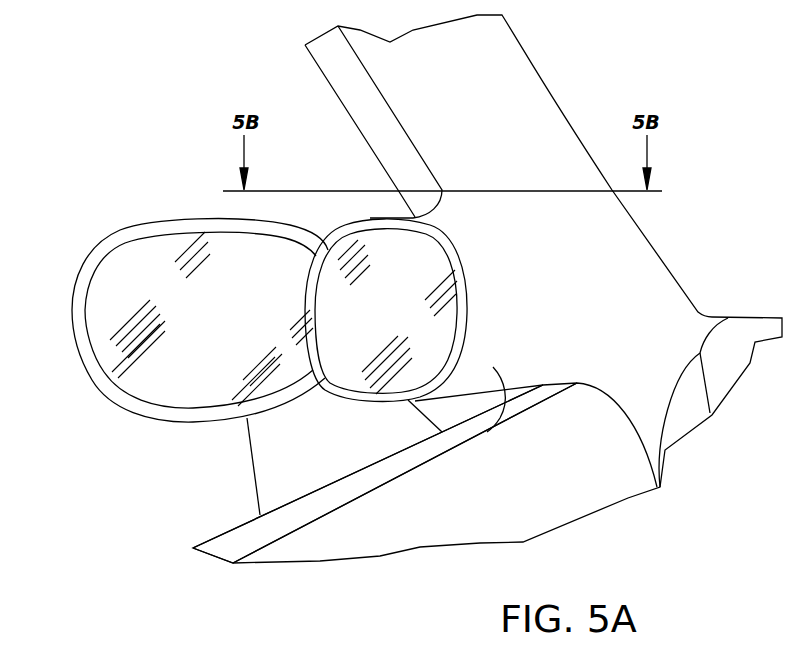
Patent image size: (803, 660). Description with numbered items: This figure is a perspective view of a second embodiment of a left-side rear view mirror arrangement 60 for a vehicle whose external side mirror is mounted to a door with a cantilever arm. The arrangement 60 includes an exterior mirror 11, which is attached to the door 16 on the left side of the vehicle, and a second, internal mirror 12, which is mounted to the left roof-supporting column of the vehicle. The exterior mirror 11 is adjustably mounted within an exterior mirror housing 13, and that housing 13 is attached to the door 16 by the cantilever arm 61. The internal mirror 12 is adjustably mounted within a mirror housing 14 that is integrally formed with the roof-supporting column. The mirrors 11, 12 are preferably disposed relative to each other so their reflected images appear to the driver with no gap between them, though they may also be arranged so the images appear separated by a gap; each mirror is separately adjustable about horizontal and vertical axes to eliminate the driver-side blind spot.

The left-side rear view mirror arrangement 60 is at (108, 160).
The exterior mirror housing 13 is at (180, 219).
The exterior mirror 11 is at (162, 377).
The internal mirror 12 is at (435, 300).
The mirror housing 14 is at (487, 432).
The cantilever arm 61 is at (275, 472).
The door 16 is at (305, 552).